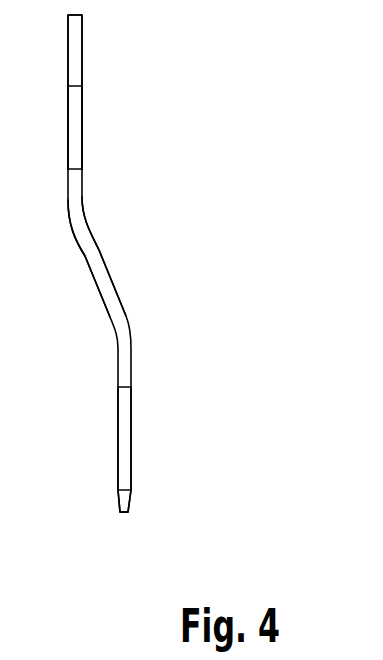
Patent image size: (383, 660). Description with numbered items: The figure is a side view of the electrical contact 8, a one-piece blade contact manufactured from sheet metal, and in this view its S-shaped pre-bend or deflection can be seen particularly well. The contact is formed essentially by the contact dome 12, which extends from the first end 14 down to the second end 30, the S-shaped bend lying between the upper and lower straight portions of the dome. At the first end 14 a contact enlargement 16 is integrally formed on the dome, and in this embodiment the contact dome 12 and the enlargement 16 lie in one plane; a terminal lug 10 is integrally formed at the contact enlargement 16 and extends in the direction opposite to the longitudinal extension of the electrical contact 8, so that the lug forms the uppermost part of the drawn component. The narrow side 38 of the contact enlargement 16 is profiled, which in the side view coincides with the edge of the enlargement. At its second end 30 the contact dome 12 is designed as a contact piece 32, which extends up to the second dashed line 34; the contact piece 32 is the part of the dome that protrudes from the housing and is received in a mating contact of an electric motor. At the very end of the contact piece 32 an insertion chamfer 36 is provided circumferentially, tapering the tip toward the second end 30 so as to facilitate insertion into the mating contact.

The electrical contact 8 is at (121, 258).
The terminal lug 10 is at (75, 40).
The contact dome 12 is at (97, 265).
The first end 14 is at (70, 85).
The contact enlargement 16 is at (75, 128).
The narrow side 38 is at (75, 127).
The second end 30 is at (122, 512).
The contact piece 32 is at (123, 425).
The second dashed line 34 is at (120, 386).
The insertion chamfer 36 is at (123, 498).